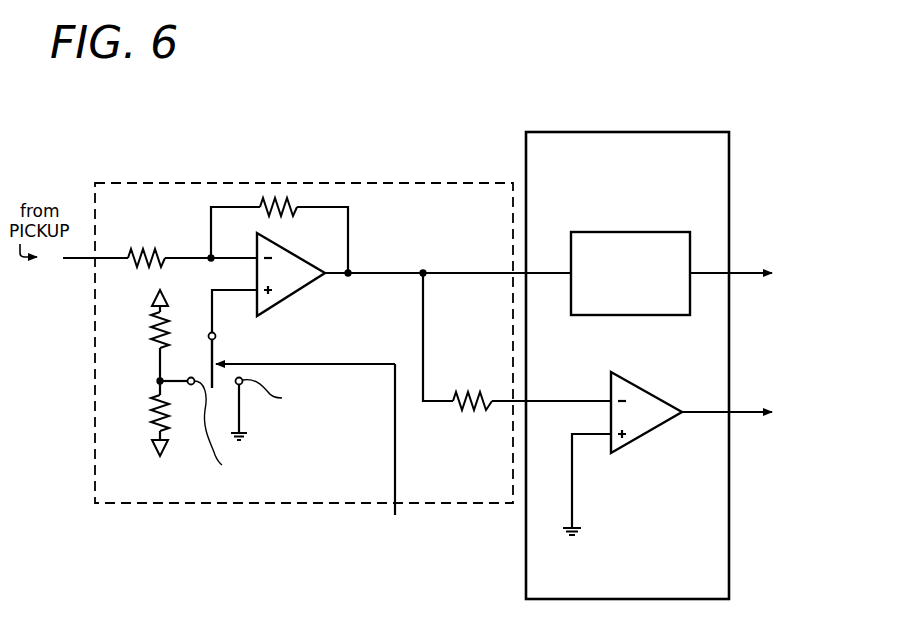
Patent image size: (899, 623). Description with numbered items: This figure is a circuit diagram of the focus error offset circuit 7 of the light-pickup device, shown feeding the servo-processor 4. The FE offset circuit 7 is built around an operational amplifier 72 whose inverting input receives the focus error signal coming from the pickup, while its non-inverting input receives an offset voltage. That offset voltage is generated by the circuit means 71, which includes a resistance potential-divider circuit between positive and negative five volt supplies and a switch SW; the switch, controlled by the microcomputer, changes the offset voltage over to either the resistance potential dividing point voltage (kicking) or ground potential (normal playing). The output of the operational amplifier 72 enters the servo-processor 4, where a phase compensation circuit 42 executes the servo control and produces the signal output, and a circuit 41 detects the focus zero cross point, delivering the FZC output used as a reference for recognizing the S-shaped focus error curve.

The focus error offset circuit 7 is at (235, 182).
The operational amplifier 72 is at (305, 289).
The circuit means 71 is at (192, 408).
The servo-processor 4 is at (729, 232).
The phase compensation circuit 42 is at (640, 315).
The circuit for detecting a focus zero cross point 41 is at (645, 435).